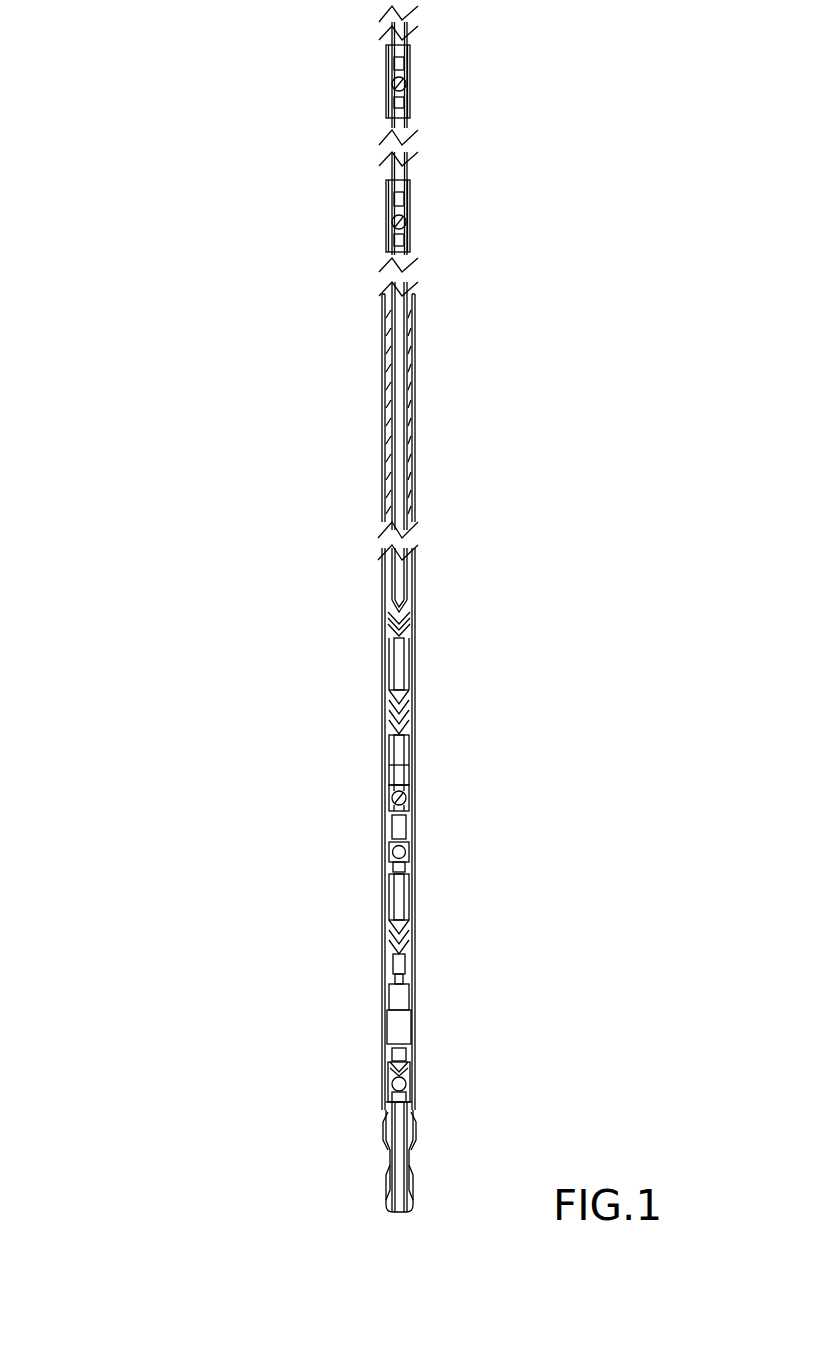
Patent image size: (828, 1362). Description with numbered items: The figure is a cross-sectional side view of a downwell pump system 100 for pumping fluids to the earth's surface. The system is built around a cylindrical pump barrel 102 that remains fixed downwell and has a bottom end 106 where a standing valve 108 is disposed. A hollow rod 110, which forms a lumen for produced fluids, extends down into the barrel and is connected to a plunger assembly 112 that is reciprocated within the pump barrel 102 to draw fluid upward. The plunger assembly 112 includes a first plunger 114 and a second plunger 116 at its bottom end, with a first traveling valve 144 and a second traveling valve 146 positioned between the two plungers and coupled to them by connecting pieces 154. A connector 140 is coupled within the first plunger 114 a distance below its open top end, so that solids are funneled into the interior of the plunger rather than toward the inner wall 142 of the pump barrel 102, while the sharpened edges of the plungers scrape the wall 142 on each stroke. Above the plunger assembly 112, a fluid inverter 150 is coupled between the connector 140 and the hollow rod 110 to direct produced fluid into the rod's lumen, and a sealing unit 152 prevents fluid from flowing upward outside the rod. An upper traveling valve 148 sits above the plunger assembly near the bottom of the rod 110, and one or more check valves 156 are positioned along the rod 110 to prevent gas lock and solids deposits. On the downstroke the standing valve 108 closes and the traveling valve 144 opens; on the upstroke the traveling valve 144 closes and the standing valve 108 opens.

The pump system 100 is at (140, 484).
The pump barrel 102 is at (386, 516).
The bottom end 106 is at (386, 1199).
The standing valve 108 is at (390, 1082).
The rod 110 is at (388, 42).
The plunger assembly 112 is at (323, 1030).
The first plunger 114 is at (381, 645).
The second plunger 116 is at (413, 968).
The connector 140 is at (410, 656).
The inner wall 142 is at (413, 1025).
The traveling valve 144 is at (413, 797).
The second traveling valve 146 is at (413, 859).
The traveling valve 148 is at (389, 208).
The fluid inverter 150 is at (415, 594).
The sealing unit 152 is at (389, 406).
The connecting piece 154 is at (413, 748).
The check valve 156 is at (412, 84).